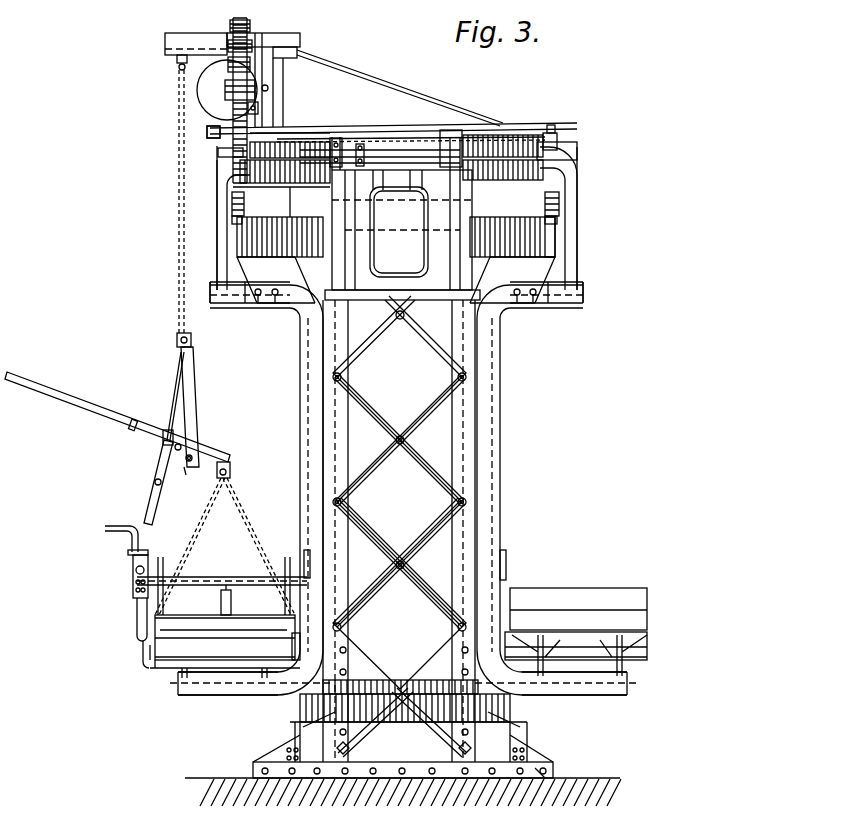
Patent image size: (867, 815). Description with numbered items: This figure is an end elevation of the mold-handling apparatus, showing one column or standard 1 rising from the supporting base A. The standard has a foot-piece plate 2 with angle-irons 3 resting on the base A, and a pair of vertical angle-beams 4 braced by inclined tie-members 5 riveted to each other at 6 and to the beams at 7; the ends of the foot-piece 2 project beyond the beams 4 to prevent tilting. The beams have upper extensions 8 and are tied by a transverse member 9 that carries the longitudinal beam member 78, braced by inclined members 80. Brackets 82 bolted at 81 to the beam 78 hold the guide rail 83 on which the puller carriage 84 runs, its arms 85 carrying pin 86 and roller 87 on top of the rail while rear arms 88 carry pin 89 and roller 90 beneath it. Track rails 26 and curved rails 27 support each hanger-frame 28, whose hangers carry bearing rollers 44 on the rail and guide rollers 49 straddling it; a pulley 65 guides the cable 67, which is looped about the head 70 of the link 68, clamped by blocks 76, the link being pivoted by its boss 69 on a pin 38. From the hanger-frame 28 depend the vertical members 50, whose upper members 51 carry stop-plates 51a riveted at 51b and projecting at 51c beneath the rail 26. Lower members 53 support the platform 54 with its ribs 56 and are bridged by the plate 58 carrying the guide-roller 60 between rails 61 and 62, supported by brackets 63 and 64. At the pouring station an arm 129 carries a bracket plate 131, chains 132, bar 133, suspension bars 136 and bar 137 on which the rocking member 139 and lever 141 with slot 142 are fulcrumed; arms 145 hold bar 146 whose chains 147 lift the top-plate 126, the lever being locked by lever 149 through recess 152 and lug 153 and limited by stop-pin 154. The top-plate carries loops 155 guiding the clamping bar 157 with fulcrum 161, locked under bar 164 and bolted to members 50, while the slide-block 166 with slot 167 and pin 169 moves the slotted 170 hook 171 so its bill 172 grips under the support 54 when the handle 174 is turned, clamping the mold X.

The column or standard 1 is at (399, 531).
The foot-piece plate member 2 is at (553, 762).
The angle-irons or flanges 3 is at (530, 775).
The vertical angle-beams 4 is at (323, 440).
The inclined tie-members 5 is at (378, 470).
The rivets (tie-member crossing) 6 is at (400, 436).
The rivets (tie-member ends) 7 is at (333, 377).
The upper frame extensions 8 is at (470, 123).
The upper horizontal transverse member 9 is at (325, 127).
The track rail 26 is at (240, 238).
The curved track rail 27 is at (512, 225).
The hanger-frame member 28 is at (217, 200).
The upper bearing pin 38 is at (445, 150).
The bearing roller 44 is at (592, 183).
The guide roller 49 is at (233, 220).
The vertical mold-carrier members 50 is at (300, 396).
The horizontal outwardly directed members 51 is at (228, 298).
The stop-plate 51a is at (272, 270).
The rivets (stop-plate) 51b is at (275, 300).
The projecting portion of stop-plate 51c is at (245, 280).
The outwardly directed horizontal members 53 is at (225, 696).
The platform 54 is at (185, 692).
The ribs 56 is at (615, 648).
The horizontal plate 58 is at (290, 692).
The guide-roller 60 is at (340, 670).
The guide track rail 61 is at (295, 724).
The guide track rail 62 is at (378, 696).
The brackets 63 is at (290, 748).
The brackets 64 is at (340, 670).
The pulley-wheel 65 is at (505, 145).
The wire rope or cable 67 is at (392, 160).
The link member 68 is at (408, 185).
The apertured boss 69 is at (452, 185).
The head or boss 70 is at (332, 170).
The clamping blocks 76 is at (360, 143).
The beam member 78 is at (278, 115).
The inclined bracing members 80 is at (355, 72).
The bolts 81 is at (297, 50).
The brackets 82 is at (283, 62).
The guide-bar or rail 83 is at (233, 66).
The puller carriage 84 is at (225, 90).
The upwardly extending arms 85 is at (245, 40).
The transverse pin 86 is at (252, 46).
The running roller 87 is at (233, 30).
The rearwardly extending arms 88 is at (262, 92).
The bearing pin 89 is at (228, 100).
The running roller 90 is at (268, 88).
The top-plate 126 is at (233, 608).
The laterally projecting beam or arm 129 is at (165, 42).
The bracket plate 131 is at (177, 58).
The chains 132 is at (178, 218).
The transverse supporting bar 133 is at (192, 342).
The suspension bars 136 is at (195, 400).
The transverse bar 137 is at (185, 470).
The rocking member 139 is at (194, 455).
The operating lever 141 is at (78, 380).
The longitudinal slot 142 is at (135, 430).
The depending arms 145 is at (231, 466).
The horizontal bar 146 is at (228, 474).
The chains 147 is at (222, 540).
The locking lever 149 is at (175, 385).
The locking recess 152 is at (160, 445).
The lug 153 is at (172, 432).
The stop-pin 154 is at (152, 486).
The guide loops 155 is at (163, 570).
The clamping member or bar 157 is at (285, 568).
The fulcrum member 161 is at (223, 610).
The locking bar 164 is at (312, 562).
The slide-block 166 is at (133, 568).
The elongated slot 167 is at (136, 574).
The bearing pin 169 is at (134, 596).
The slot 170 is at (136, 622).
The clamping hook 171 is at (145, 665).
The bill of clamping hook 172 is at (152, 672).
The handle 174 is at (105, 528).
The mold X is at (168, 645).
The supporting base A is at (575, 778).